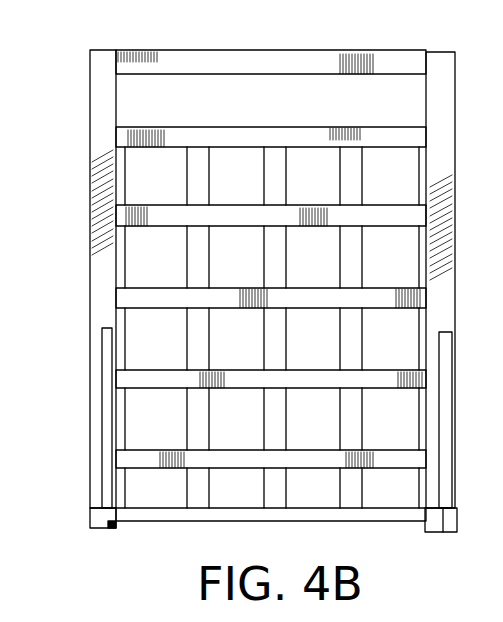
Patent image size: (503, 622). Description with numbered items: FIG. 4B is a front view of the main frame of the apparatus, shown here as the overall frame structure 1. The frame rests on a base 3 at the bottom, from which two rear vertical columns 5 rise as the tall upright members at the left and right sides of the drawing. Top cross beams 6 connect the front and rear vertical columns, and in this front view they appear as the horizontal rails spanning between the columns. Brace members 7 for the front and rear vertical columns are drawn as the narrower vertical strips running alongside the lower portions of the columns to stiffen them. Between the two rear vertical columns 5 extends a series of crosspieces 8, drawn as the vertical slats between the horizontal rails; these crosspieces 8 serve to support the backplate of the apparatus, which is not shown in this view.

The pallet rack assembly 1 is at (72, 70).
The base 3 is at (150, 516).
The rear vertical columns 5 is at (92, 140).
The top cross beams 6 is at (314, 58).
The brace members 7 is at (90, 403).
The crosspieces 8 is at (398, 229).